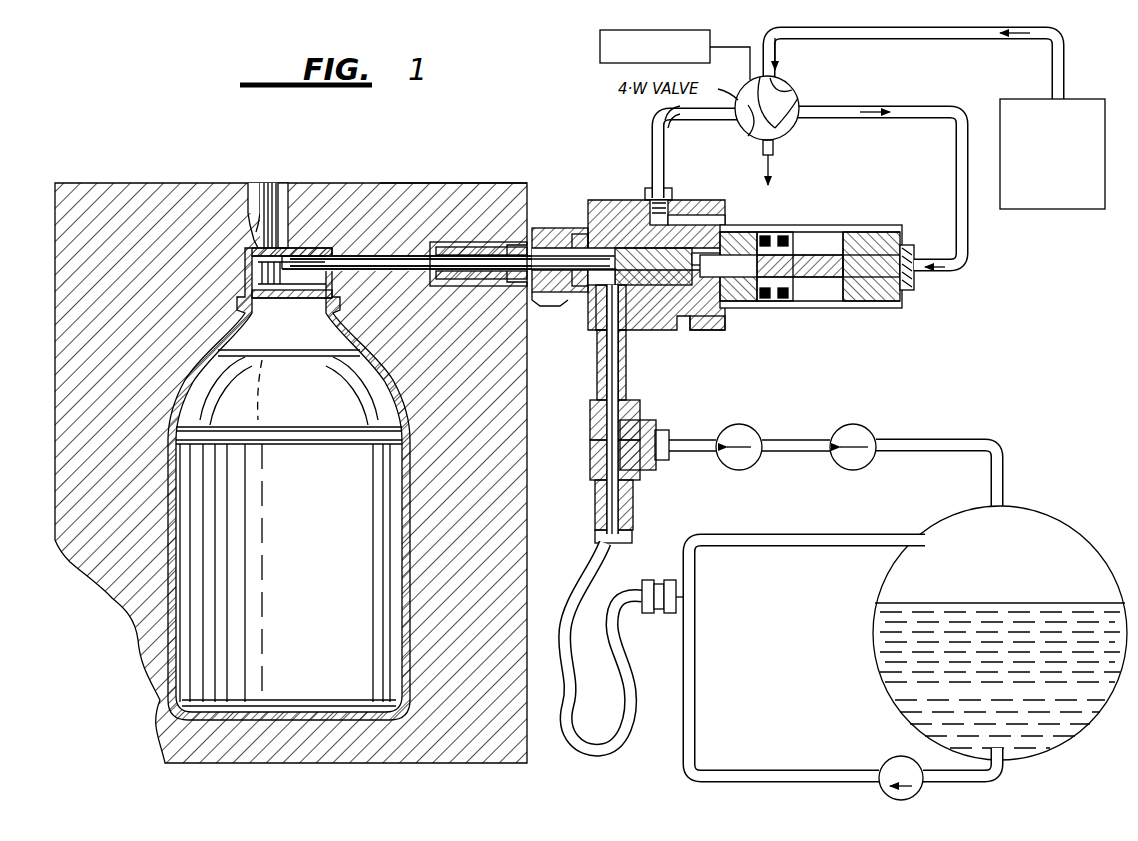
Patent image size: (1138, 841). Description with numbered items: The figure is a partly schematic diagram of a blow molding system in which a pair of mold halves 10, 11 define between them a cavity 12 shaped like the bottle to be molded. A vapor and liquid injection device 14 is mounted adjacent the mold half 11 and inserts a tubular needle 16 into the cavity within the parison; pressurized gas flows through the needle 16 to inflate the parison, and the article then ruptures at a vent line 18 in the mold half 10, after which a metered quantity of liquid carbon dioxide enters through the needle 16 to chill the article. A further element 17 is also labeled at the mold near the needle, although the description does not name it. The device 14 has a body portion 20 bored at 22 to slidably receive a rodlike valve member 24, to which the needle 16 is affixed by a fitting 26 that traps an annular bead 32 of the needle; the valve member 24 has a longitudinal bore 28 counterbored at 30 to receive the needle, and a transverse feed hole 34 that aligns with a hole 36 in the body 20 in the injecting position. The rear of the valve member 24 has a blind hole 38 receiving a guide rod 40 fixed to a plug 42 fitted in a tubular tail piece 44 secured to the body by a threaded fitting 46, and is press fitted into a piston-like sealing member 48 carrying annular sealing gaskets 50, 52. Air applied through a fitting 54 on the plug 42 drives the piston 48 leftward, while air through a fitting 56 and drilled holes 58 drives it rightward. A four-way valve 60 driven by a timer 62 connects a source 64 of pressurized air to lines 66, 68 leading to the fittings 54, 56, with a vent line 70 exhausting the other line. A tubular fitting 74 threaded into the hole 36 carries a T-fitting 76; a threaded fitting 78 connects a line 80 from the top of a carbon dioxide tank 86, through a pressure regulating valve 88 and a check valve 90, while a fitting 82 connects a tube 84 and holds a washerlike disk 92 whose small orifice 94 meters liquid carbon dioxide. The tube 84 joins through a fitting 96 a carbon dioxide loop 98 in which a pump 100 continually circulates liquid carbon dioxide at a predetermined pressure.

The mold half 10 is at (160, 180).
The mold half 11 is at (415, 180).
The cavity 12 is at (289, 484).
The vapor and liquid injection device 14 is at (818, 224).
The tubular needle 16 is at (338, 248).
The vent passage 17 is at (300, 246).
The vent line 18 is at (254, 182).
The body portion 20 is at (606, 212).
The bore 22 is at (630, 320).
The valve member 24 is at (595, 300).
The fitting 26 is at (460, 248).
The longitudinal bore 28 is at (580, 236).
The counterbore 30 is at (548, 236).
The annular bead 32 is at (556, 306).
The transverse feed hole 34 is at (612, 246).
The hole 36 is at (605, 325).
The blind hole 38 is at (763, 234).
The guide rod 40 is at (812, 255).
The plug 42 is at (880, 230).
The tubular tail piece 44 is at (860, 308).
The threaded fitting 46 is at (712, 328).
The piston-like sealing member 48 is at (776, 302).
The annular sealing gasket 50 is at (763, 300).
The annular sealing gasket 52 is at (783, 300).
The fitting 54 is at (914, 262).
The fitting 56 is at (670, 200).
The drilled holes 58 is at (695, 216).
The four-way valve 60 is at (792, 92).
The timer 62 is at (600, 55).
The source of pressurized air 64 is at (1065, 209).
The line 66 is at (925, 106).
The line 68 is at (651, 138).
The vent line 70 is at (775, 147).
The tubular fitting 74 is at (626, 365).
The T-fitting 76 is at (640, 425).
The threaded fitting 78 is at (668, 433).
The line 80 is at (698, 452).
The fitting 82 is at (595, 505).
The tube 84 is at (592, 580).
The carbon dioxide tank 86 is at (1082, 530).
The pressure regulating valve 88 is at (860, 426).
The check valve 90 is at (745, 425).
The washerlike disk 92 is at (590, 460).
The orifice 94 is at (590, 420).
The fitting 96 is at (662, 578).
The carbon dioxide loop 98 is at (691, 705).
The pump 100 is at (890, 758).